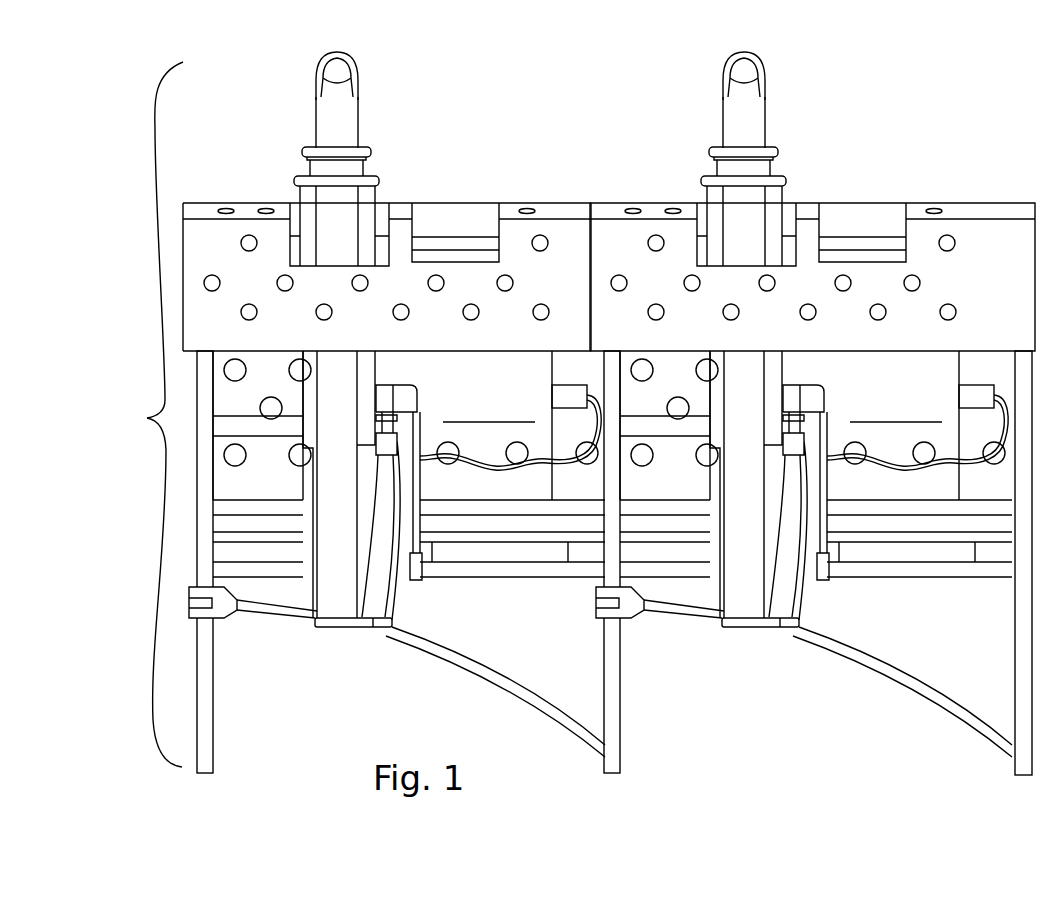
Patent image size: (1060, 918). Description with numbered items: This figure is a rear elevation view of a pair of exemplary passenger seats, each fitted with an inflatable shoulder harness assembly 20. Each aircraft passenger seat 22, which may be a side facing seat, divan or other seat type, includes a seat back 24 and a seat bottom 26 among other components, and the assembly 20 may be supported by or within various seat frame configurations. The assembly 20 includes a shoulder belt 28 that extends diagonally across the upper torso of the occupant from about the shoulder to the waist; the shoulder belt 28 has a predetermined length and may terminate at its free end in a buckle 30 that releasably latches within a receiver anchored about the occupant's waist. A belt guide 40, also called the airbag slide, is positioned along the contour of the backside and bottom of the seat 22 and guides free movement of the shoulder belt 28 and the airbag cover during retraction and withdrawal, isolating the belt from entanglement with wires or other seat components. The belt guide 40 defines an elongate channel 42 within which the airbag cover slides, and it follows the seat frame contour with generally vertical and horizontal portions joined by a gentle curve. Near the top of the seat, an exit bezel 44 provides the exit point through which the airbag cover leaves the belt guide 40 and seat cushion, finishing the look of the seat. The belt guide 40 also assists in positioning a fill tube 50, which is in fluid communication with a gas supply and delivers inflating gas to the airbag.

The inflatable shoulder harness assembly 20 is at (576, 397).
The aircraft passenger seat 22 is at (503, 203).
The seat back 24 is at (400, 218).
The seat bottom 26 is at (525, 582).
The shoulder belt 28 is at (348, 122).
The buckle 30 is at (354, 70).
The belt guide 40 is at (370, 362).
The elongate channel 42 is at (296, 203).
The exit bezel 44 is at (306, 150).
The fill tube 50 is at (385, 578).